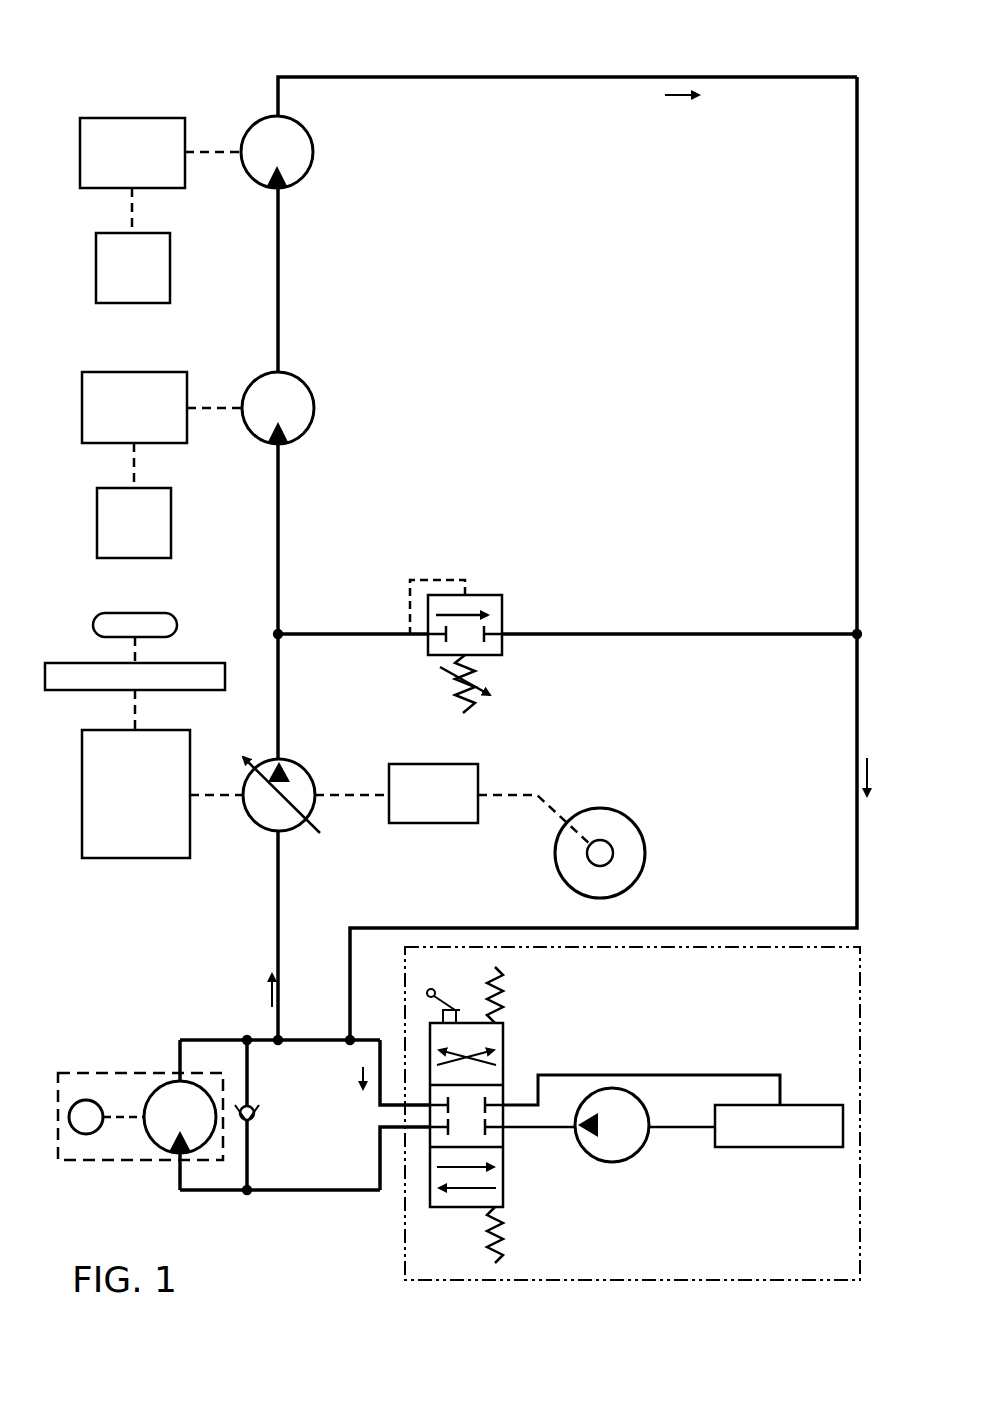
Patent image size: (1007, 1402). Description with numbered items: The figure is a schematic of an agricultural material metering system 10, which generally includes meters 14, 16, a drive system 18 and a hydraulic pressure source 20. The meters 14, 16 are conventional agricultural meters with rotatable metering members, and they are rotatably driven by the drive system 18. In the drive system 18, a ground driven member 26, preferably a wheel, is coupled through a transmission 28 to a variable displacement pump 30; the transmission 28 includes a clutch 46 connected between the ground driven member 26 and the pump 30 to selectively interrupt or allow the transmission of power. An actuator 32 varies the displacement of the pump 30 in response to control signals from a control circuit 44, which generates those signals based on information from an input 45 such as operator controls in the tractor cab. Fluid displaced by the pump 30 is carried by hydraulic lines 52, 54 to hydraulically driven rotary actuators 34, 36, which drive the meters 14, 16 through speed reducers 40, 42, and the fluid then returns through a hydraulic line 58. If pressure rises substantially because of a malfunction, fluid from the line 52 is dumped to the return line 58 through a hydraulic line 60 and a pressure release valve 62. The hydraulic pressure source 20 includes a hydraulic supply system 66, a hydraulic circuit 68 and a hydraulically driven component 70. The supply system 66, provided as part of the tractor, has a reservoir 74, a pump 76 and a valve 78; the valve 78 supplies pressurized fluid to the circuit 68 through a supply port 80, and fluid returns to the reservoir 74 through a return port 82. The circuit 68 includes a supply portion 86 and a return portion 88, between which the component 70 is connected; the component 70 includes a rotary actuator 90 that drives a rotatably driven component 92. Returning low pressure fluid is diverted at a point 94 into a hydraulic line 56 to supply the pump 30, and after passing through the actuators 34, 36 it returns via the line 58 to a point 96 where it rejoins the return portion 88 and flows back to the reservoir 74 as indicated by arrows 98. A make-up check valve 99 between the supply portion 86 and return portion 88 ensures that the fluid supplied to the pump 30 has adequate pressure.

The agricultural material metering system 10 is at (534, 66).
The meter 14 is at (172, 523).
The meter 16 is at (171, 268).
The drive system 18 is at (697, 73).
The hydraulic pressure source 20 is at (866, 970).
The ground driven member 26 is at (600, 808).
The transmission 28 is at (510, 790).
The variable displacement pump 30 is at (300, 772).
The actuator 32 is at (82, 794).
The hydraulically driven rotary actuator 34 is at (314, 408).
The hydraulically driven rotary actuator 36 is at (313, 152).
The speed reducer 40 is at (136, 372).
The speed reducer 42 is at (134, 116).
The control circuit 44 is at (212, 663).
The input 45 is at (138, 613).
The clutch 46 is at (434, 764).
The hydraulic line 52 is at (280, 530).
The hydraulic line 54 is at (280, 280).
The hydraulic line 56 is at (280, 870).
The hydraulic return line 58 is at (858, 258).
The hydraulic line 60 is at (338, 633).
The pressure release valve 62 is at (484, 596).
The hydraulic supply system 66 is at (798, 1102).
The hydraulic circuit 68 is at (324, 1208).
The hydraulically driven component 70 is at (138, 1168).
The reservoir 74 is at (779, 1148).
The pump 76 is at (612, 1162).
The valve 78 is at (506, 1206).
The supply port 80 is at (446, 1002).
The return port 82 is at (404, 1104).
The supply portion 86 is at (266, 1191).
The return portion 88 is at (321, 1042).
The hydraulically driven rotary actuator 90 is at (156, 1092).
The rotatably driven component 92 is at (90, 1100).
The diversion point 94 is at (276, 1036).
The return point 96 is at (350, 1037).
The arrows 98 is at (678, 100).
The make-up check valve 99 is at (256, 1116).